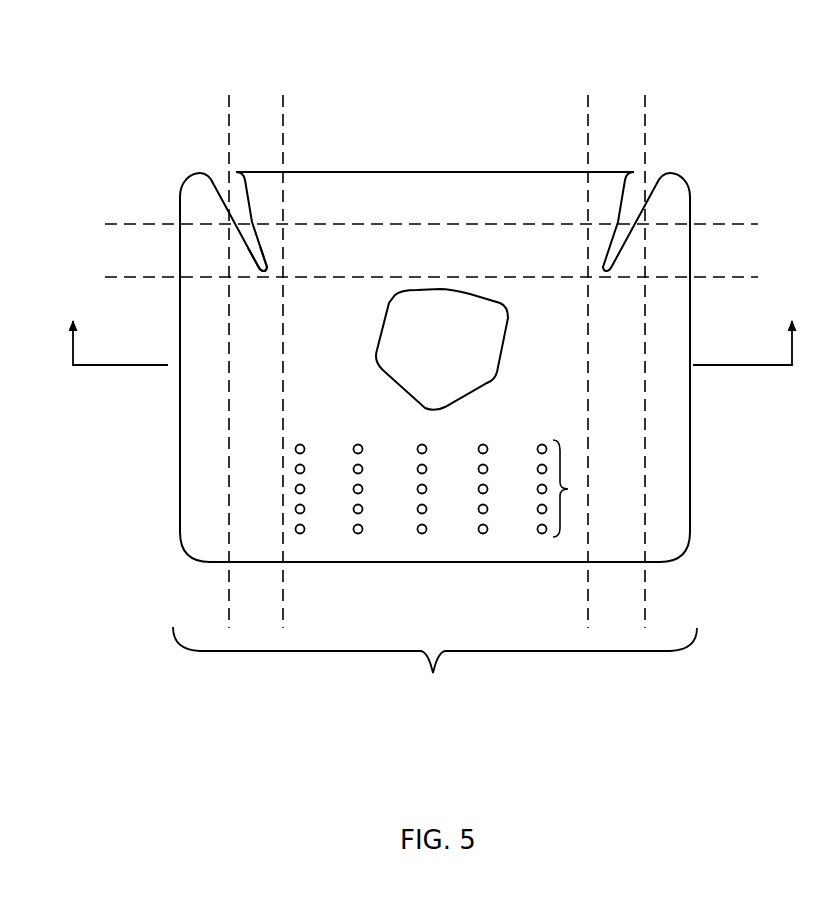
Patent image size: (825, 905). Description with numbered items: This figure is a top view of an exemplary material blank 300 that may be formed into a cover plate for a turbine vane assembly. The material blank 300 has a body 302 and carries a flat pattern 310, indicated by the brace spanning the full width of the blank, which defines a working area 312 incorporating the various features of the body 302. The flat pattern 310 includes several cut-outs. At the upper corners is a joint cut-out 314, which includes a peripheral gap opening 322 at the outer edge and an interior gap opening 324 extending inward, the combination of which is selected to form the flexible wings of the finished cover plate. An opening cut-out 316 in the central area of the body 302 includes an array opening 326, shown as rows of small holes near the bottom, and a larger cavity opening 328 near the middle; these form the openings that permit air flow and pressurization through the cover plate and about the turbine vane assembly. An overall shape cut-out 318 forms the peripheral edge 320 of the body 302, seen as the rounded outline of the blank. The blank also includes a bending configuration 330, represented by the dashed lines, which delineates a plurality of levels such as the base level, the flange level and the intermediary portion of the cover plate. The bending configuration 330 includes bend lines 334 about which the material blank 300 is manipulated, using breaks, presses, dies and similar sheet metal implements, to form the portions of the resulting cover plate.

The material blank 300 is at (737, 48).
The body 302 is at (452, 158).
The flat pattern 310 is at (435, 665).
The working area 312 is at (246, 411).
The joint cut-out 314 is at (258, 205).
The opening cut-out 316 is at (400, 285).
The overall shape cut-out 318 is at (694, 417).
The peripheral edge 320 is at (692, 486).
The peripheral gap opening 322 is at (210, 205).
The interior gap opening 324 is at (243, 262).
The array opening 326 is at (568, 489).
The cavity opening 328 is at (450, 308).
The bending configuration 330 is at (647, 98).
The bend lines 334 is at (646, 132).